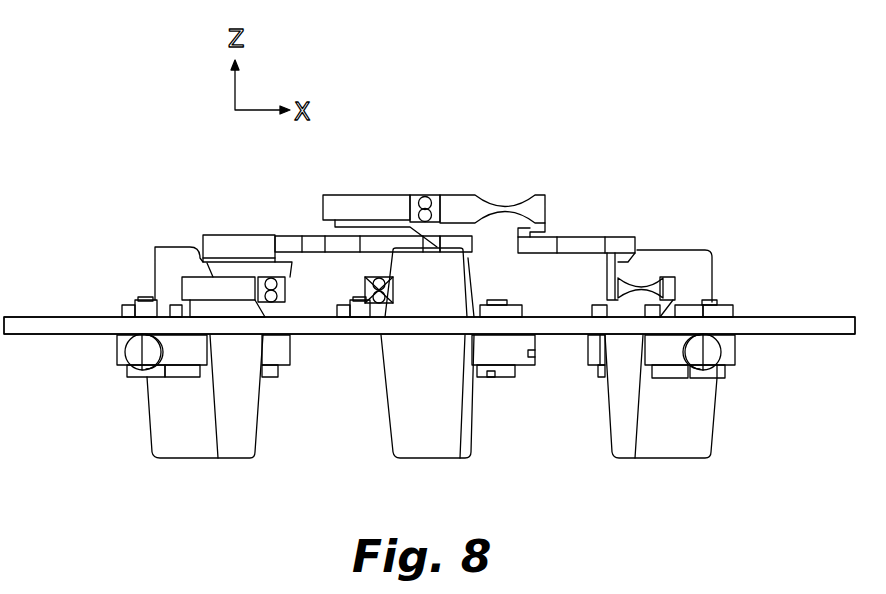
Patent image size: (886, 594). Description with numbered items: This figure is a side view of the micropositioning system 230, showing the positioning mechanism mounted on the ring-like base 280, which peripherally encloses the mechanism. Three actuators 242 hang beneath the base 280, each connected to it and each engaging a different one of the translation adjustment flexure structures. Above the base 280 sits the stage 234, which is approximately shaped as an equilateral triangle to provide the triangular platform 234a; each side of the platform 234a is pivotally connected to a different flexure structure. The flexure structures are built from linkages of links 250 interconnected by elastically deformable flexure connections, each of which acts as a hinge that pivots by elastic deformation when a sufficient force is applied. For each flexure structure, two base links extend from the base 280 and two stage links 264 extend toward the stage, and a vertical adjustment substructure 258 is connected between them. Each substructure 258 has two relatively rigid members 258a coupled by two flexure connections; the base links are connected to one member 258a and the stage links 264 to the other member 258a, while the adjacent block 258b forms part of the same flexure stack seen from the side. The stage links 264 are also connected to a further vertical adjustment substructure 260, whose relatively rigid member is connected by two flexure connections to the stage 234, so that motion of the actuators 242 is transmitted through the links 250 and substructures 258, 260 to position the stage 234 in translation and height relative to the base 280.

The sensor assembly 230 is at (855, 334).
The stage 234 is at (358, 195).
The triangular platform 234a is at (390, 195).
The actuators 242 is at (178, 458).
The links 250 is at (580, 256).
The vertical adjustment substructure 258 is at (288, 290).
The relatively rigid members 258a is at (185, 283).
The flexure block 258b is at (225, 245).
The vertical adjustment substructure 260 is at (512, 200).
The stage links 264 is at (200, 266).
The base 280 is at (30, 334).